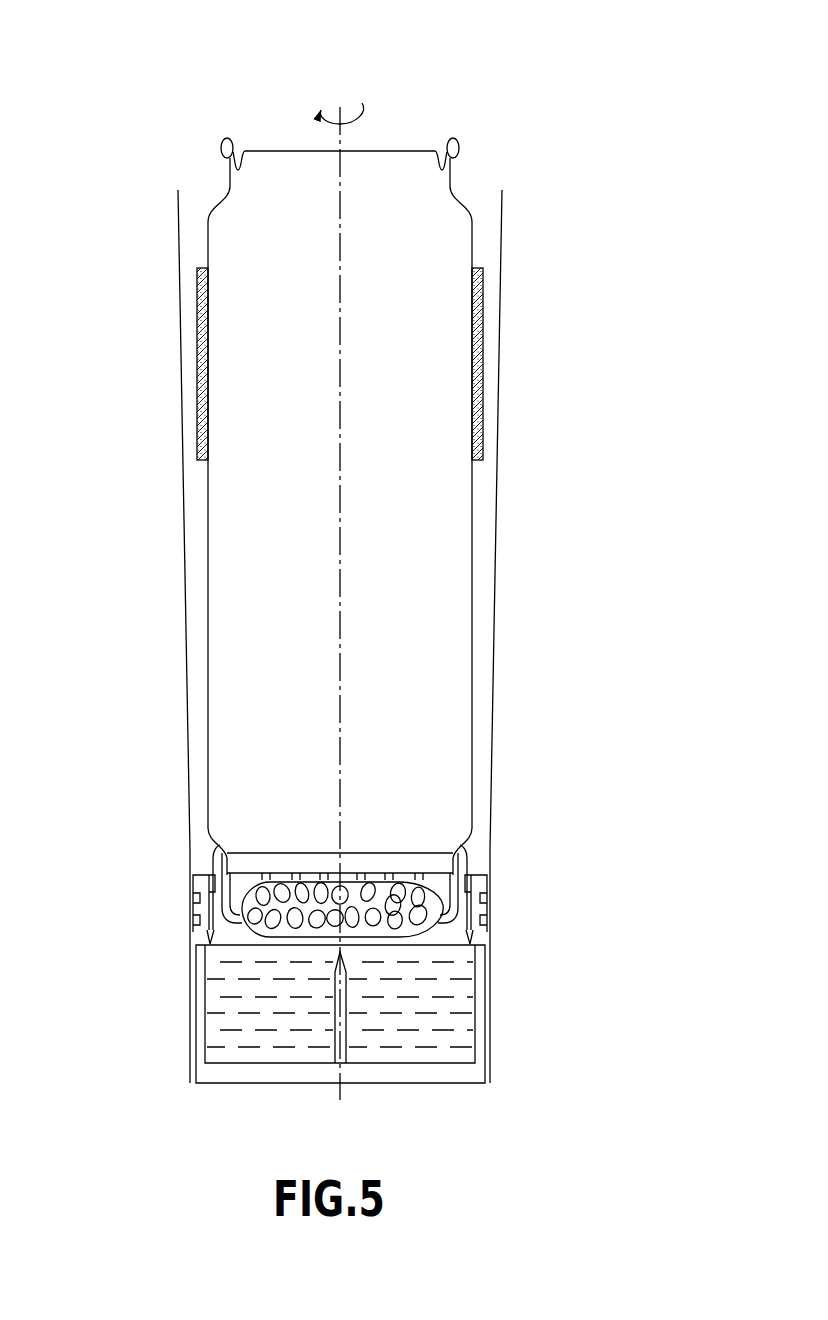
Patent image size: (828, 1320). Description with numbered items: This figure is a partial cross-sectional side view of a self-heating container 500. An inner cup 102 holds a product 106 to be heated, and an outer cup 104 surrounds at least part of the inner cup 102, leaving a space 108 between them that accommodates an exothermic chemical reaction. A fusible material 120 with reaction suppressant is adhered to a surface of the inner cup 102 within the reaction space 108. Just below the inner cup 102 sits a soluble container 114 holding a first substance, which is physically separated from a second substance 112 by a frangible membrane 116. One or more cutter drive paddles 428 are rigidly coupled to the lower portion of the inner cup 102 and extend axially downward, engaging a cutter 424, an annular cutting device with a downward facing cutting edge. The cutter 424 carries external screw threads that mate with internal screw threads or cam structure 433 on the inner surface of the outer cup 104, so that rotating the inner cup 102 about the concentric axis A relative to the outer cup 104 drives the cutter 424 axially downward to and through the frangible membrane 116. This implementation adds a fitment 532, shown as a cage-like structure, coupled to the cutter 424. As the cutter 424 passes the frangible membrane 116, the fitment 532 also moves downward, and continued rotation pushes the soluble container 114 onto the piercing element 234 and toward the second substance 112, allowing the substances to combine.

The self-heating container 500 is at (577, 116).
The inner cup 102 is at (473, 543).
The outer cup 104 is at (496, 678).
The product 106 is at (300, 481).
The space 108 is at (483, 610).
The second substance 112 is at (469, 1042).
The soluble container 114 is at (436, 923).
The frangible membrane 116 is at (265, 946).
The fusible material 120 is at (485, 345).
The piercing element 234 is at (333, 1036).
The cutter 424 is at (467, 942).
The cutter drive paddles 428 is at (464, 845).
The internal screw threads or cam structure 433 is at (491, 900).
The fitment 532 is at (406, 889).